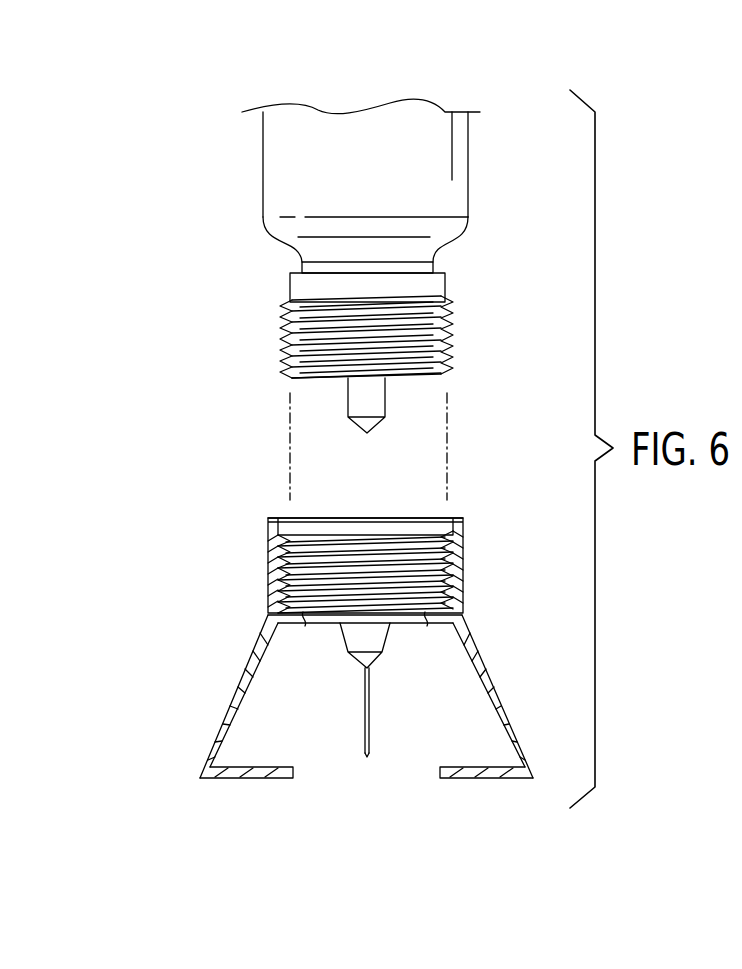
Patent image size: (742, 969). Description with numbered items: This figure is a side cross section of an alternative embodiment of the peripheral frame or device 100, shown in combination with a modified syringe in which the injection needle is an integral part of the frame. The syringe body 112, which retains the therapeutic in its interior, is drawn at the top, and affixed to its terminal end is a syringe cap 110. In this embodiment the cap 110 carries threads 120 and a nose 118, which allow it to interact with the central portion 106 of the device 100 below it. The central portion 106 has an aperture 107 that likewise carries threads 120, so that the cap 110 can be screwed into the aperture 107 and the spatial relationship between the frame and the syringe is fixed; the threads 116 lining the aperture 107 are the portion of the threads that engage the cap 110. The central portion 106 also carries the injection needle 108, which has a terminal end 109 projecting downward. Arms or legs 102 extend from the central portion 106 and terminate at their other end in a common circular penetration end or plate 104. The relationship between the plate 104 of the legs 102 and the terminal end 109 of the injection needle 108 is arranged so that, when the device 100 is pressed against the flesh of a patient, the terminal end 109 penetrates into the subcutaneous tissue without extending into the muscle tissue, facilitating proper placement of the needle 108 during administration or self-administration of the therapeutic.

The peripheral frame or device 100 is at (237, 532).
The arms 102 is at (228, 714).
The penetration end or plate 104 is at (237, 780).
The central portion 106 is at (402, 543).
The aperture 107 is at (340, 518).
The injection needle 108 is at (370, 715).
The terminal end 109 is at (366, 753).
The syringe cap 110 is at (290, 292).
The body 112 is at (263, 175).
The internal threads 116 is at (283, 558).
The nose 118 is at (348, 400).
The threads 120 is at (302, 347).